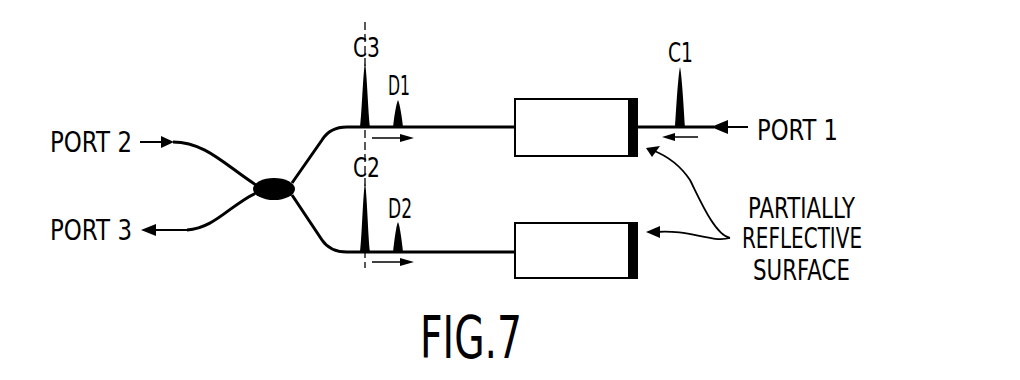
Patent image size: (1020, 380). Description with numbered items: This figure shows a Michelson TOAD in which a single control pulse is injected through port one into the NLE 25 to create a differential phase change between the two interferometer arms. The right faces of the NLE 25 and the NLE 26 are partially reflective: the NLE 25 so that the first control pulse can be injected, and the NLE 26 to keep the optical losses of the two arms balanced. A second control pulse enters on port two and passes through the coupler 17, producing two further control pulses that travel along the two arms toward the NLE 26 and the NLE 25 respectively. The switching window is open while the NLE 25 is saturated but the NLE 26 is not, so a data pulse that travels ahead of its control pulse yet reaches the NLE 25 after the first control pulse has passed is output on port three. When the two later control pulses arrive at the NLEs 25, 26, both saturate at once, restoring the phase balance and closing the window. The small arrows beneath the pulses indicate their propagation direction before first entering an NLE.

The coupler 17 is at (273, 200).
The NLE 25 is at (576, 99).
The NLE 26 is at (576, 222).